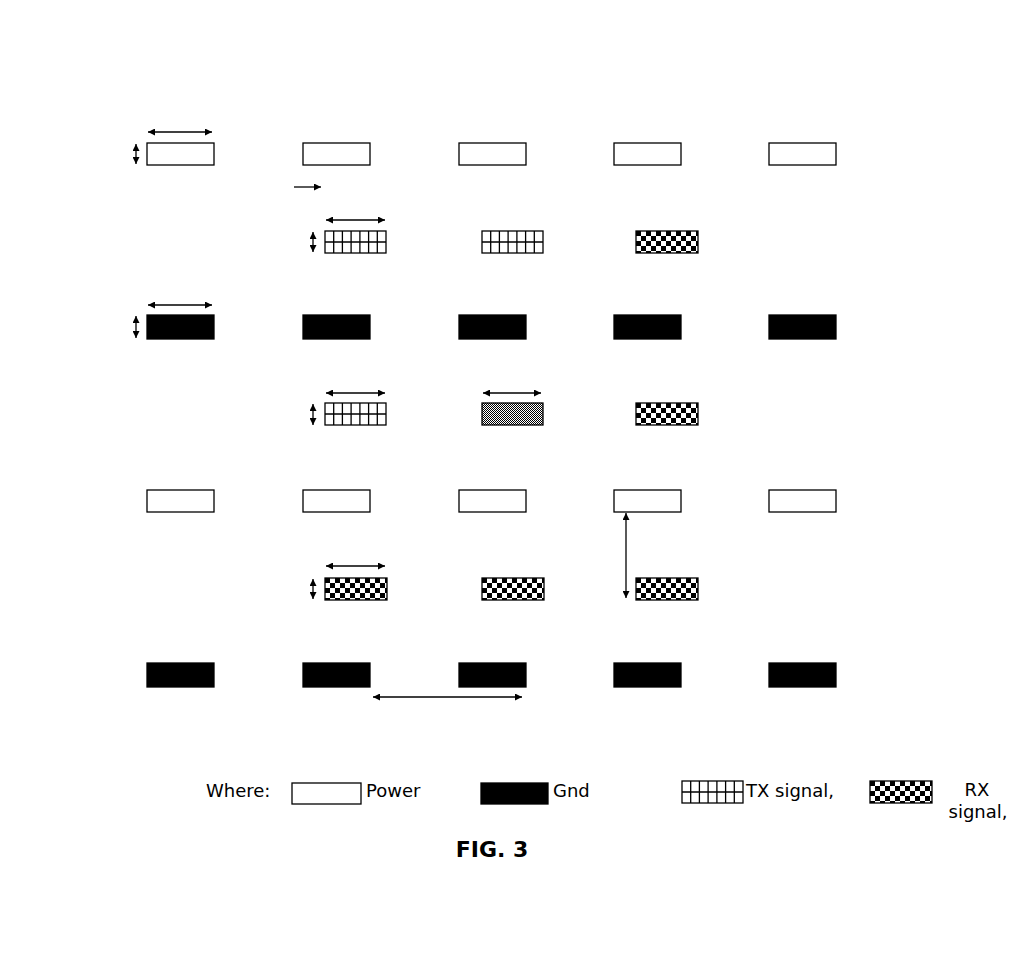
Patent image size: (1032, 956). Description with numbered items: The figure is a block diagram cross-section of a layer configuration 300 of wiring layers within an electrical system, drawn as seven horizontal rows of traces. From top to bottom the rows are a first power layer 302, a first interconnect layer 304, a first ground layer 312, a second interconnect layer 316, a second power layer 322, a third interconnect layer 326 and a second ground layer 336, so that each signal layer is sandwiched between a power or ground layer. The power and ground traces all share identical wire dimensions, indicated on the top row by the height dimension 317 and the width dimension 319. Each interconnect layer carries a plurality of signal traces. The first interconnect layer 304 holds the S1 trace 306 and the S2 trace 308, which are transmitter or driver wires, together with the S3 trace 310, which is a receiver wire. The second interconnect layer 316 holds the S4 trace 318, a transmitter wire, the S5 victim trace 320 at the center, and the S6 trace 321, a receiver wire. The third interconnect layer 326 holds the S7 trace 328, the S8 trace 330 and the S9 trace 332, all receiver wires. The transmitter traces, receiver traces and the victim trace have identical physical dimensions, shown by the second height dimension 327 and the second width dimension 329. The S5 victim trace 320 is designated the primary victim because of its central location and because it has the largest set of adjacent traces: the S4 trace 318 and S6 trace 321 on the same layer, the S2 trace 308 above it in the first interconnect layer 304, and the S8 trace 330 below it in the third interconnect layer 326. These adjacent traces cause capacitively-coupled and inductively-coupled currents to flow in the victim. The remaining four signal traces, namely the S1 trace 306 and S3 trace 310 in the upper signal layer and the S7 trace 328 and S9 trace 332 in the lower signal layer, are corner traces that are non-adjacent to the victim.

The layer configuration 300 is at (503, 34).
The first power layer 302 is at (1015, 153).
The first interconnect layer 304 is at (964, 227).
The S1 trace 306 is at (337, 295).
The S2 trace 308 is at (494, 295).
The S3 trace 310 is at (649, 295).
The first ground layer 312 is at (1015, 327).
The second interconnect layer 316 is at (966, 401).
The height dimension 317 is at (85, 179).
The S4 trace 318 is at (337, 472).
The width dimension 319 is at (189, 105).
The S5 victim trace 320 is at (492, 472).
The S6 trace 321 is at (649, 472).
The second power layer 322 is at (1015, 502).
The third interconnect layer 326 is at (966, 574).
The second height dimension 327 is at (253, 599).
The S7 trace 328 is at (340, 646).
The second width dimension 329 is at (320, 556).
The S8 trace 330 is at (494, 646).
The S9 trace 332 is at (649, 646).
The second ground layer 336 is at (1015, 673).